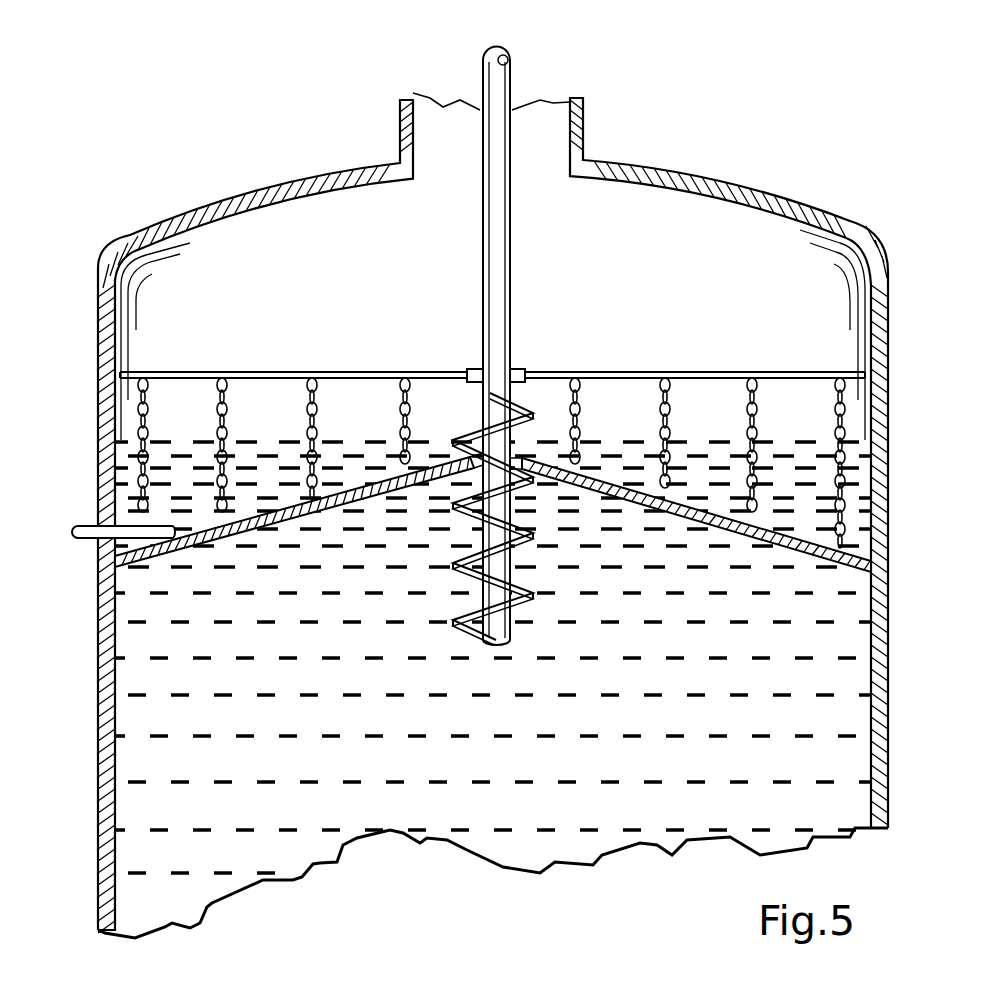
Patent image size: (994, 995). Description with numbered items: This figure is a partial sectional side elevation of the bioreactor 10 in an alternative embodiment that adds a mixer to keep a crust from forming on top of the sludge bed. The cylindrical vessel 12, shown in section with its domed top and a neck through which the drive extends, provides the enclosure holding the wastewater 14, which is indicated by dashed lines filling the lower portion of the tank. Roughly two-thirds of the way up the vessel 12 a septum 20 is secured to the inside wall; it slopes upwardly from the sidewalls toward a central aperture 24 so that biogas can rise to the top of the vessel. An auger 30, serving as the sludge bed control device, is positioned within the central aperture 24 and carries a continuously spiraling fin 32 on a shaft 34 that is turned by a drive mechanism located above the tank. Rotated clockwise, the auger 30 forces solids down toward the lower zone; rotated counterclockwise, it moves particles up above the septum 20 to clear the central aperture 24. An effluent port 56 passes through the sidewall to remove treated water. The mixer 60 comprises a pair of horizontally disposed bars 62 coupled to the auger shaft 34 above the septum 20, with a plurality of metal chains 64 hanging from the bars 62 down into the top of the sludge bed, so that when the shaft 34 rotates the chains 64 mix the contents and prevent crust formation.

The bioreactor 10 is at (661, 105).
The vessel 12 is at (767, 194).
The wastewater 14 is at (585, 769).
The septum 20 is at (388, 480).
The central aperture 24 is at (452, 447).
The auger 30 is at (515, 322).
The fin 32 is at (517, 408).
The shaft 34 is at (497, 99).
The effluent port 56 is at (88, 540).
The mixer 60 is at (492, 331).
The horizontal bars 62 is at (248, 373).
The chains 64 is at (148, 412).